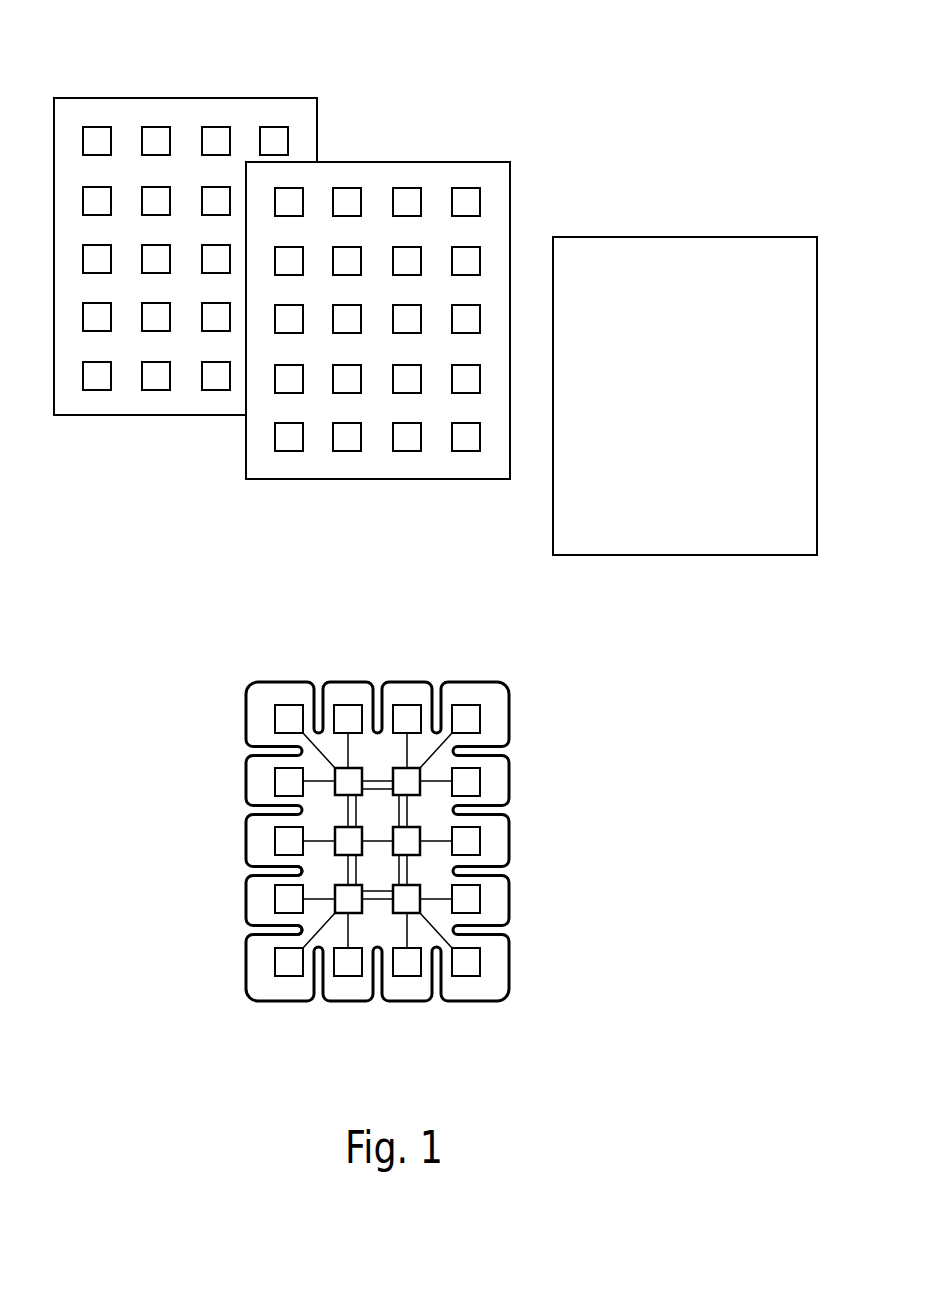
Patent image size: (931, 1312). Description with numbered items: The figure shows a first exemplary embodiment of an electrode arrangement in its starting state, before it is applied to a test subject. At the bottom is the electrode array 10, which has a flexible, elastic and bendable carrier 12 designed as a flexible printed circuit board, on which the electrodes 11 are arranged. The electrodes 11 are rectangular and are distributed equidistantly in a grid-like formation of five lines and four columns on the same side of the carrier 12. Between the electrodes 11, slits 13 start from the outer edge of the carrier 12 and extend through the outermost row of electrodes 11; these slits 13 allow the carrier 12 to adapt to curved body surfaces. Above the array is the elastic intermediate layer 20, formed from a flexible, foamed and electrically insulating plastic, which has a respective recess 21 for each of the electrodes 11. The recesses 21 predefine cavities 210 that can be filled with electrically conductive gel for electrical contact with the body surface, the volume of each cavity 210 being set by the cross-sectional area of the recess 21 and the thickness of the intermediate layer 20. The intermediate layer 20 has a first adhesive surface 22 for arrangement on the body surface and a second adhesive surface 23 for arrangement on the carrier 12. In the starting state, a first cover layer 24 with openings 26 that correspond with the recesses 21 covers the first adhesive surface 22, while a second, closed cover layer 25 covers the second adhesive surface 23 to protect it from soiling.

The electrode array 10 is at (198, 720).
The electrode 11 is at (407, 963).
The carrier 12 is at (276, 983).
The slit 13 is at (255, 872).
The elastic intermediate layer 20 is at (358, 479).
The recess 21 is at (467, 188).
The first adhesive surface 22 is at (244, 454).
The second adhesive surface 23 is at (512, 188).
The first cover layer 24 is at (128, 392).
The second cover layer 25 is at (723, 282).
The opening 26 is at (277, 127).
The cavity 210 is at (405, 442).